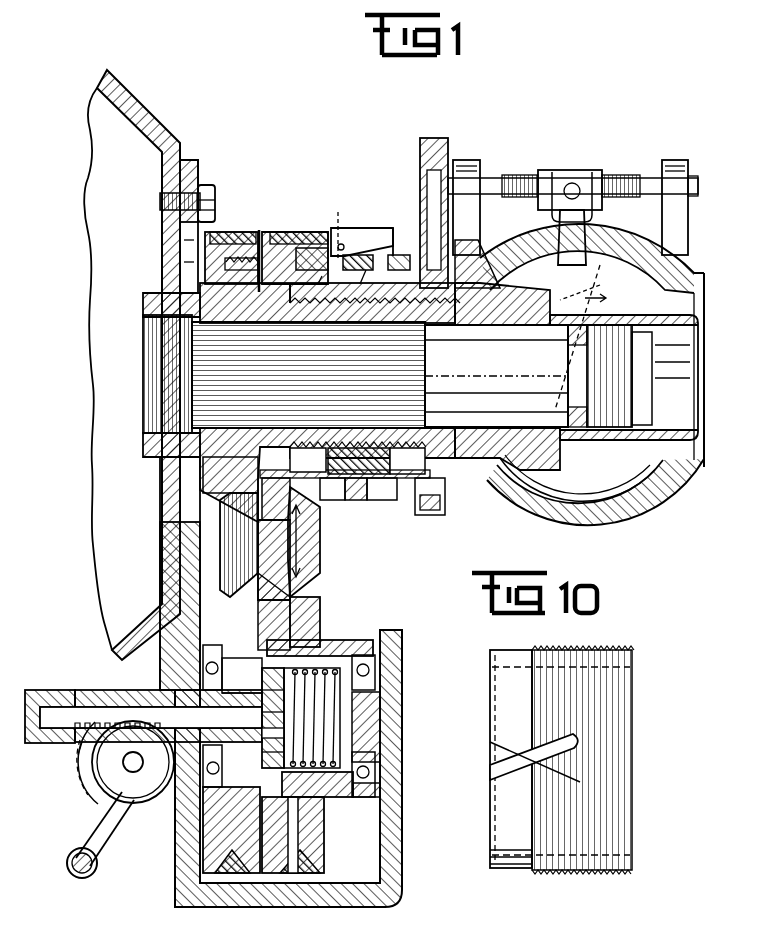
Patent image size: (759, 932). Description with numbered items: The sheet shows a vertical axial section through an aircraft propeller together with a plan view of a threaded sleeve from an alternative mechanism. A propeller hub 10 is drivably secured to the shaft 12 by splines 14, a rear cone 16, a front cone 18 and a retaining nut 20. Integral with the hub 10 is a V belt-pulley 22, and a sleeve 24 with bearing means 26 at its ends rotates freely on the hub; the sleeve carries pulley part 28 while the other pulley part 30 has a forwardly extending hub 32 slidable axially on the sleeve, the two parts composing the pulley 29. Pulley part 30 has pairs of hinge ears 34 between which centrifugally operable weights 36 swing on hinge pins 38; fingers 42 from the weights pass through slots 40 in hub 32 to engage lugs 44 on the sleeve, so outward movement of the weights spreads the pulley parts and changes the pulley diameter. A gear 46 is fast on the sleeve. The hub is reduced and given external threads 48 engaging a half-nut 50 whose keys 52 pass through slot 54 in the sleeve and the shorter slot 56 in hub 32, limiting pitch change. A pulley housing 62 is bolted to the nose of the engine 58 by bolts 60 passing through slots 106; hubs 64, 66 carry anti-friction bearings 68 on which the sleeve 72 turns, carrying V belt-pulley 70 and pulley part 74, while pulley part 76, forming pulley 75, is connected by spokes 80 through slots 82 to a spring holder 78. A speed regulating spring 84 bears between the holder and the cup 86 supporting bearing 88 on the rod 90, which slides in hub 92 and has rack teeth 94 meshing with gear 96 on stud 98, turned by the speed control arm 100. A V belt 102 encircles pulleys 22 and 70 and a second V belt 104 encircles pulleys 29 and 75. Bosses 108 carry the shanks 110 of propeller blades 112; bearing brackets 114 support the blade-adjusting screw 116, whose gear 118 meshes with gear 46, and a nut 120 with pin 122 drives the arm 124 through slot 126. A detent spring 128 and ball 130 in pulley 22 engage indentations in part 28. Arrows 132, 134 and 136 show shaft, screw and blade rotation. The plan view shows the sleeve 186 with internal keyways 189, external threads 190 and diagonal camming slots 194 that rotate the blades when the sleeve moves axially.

In FIG. 1, the propeller hub 10 is at (392, 448).
In FIG. 1, the shaft 12 is at (143, 340).
In FIG. 1, the splines 14 is at (436, 330).
In FIG. 1, the rear cone 16 is at (160, 460).
In FIG. 1, the front cone 18 is at (528, 420).
In FIG. 1, the retaining nut 20 is at (600, 436).
In FIG. 1, the V belt-pulley 22 is at (222, 244).
In FIG. 1, the sleeve 24 is at (396, 286).
In FIG. 1, the bearing means 26 is at (292, 285).
In FIG. 1, the pulley part 28 is at (276, 244).
In FIG. 1, the pulley 29 is at (300, 542).
In FIG. 1, the pulley part 30 is at (312, 248).
In FIG. 1, the hub 32 is at (410, 255).
In FIG. 1, the hinge ears 34 is at (349, 235).
In FIG. 1, the centrifugally operable weights 36 is at (372, 228).
In FIG. 1, the hinge pins 38 is at (345, 247).
In FIG. 1, the slots 40 is at (373, 272).
In FIG. 1, the fingers 42 is at (328, 289).
In FIG. 1, the lugs 44 is at (360, 284).
In FIG. 1, the gear 46 is at (476, 256).
In FIG. 1, the external threads 48 is at (294, 484).
In FIG. 1, the half-nut 50 is at (332, 500).
In FIG. 1, the keys 52 is at (356, 500).
In FIG. 1, the slot 54 is at (382, 500).
In FIG. 1, the slot 56 is at (430, 515).
In FIG. 1, the engine 58 is at (150, 132).
In FIG. 1, the bolts 60 is at (215, 200).
In FIG. 1, the pulley housing 62 is at (190, 262).
In FIG. 1, the hub 64 is at (231, 810).
In FIG. 1, the hub 66 is at (376, 715).
In FIG. 1, the anti-friction bearing 68 is at (375, 670).
In FIG. 1, the V belt-pulley 70 is at (200, 568).
In FIG. 1, the sleeve 72 is at (242, 674).
In FIG. 1, the pulley part 74 is at (320, 602).
In FIG. 1, the pulley 75 is at (300, 565).
In FIG. 1, the pulley part 76 is at (270, 585).
In FIG. 1, the spring holder 78 is at (334, 798).
In FIG. 1, the spokes 80 is at (300, 648).
In FIG. 1, the slots 82 is at (242, 683).
In FIG. 1, the speed regulating spring 84 is at (340, 735).
In FIG. 1, the cup 86 is at (262, 735).
In FIG. 1, the bearing 88 is at (262, 698).
In FIG. 1, the rod 90 is at (122, 716).
In FIG. 1, the hub 92 is at (112, 698).
In FIG. 1, the rack teeth 94 is at (78, 742).
In FIG. 1, the gear 96 is at (92, 770).
In FIG. 1, the stud 98 is at (142, 770).
In FIG. 1, the speed control arm 100 is at (98, 838).
In FIG. 1, the V belt 102 is at (224, 870).
In FIG. 1, the V belt 104 is at (288, 870).
In FIG. 1, the slots 106 is at (196, 178).
In FIG. 1, the bosses 108 is at (612, 500).
In FIG. 1, the shanks 110 is at (565, 508).
In FIG. 1, the propeller blades 112 is at (538, 468).
In FIG. 1, the bearing brackets 114 is at (470, 160).
In FIG. 1, the blade-adjusting screw 116 is at (618, 170).
In FIG. 1, the gear 118 is at (440, 138).
In FIG. 1, the nut 120 is at (572, 170).
In FIG. 1, the pin 122 is at (552, 218).
In FIG. 1, the arm 124 is at (586, 228).
In FIG. 1, the slot 126 is at (600, 275).
In FIG. 1, the detent spring 128 is at (225, 266).
In FIG. 1, the ball 130 is at (260, 232).
In FIG. 1, the arrow 132 is at (690, 318).
In FIG. 1, the arrow 134 is at (510, 170).
In FIG. 1, the arrow 136 is at (585, 337).
In FIG. 10, the sleeve 186 is at (632, 682).
In FIG. 10, the internal keyways 189 is at (620, 852).
In FIG. 10, the threads 190 is at (602, 650).
In FIG. 10, the diagonal camming slots 194 is at (488, 742).